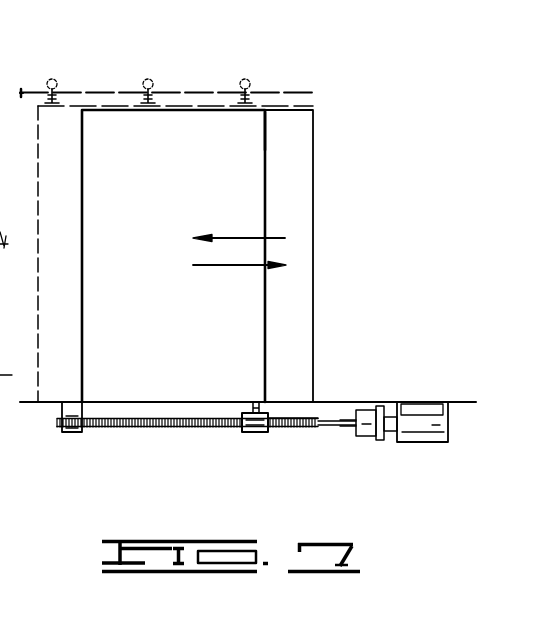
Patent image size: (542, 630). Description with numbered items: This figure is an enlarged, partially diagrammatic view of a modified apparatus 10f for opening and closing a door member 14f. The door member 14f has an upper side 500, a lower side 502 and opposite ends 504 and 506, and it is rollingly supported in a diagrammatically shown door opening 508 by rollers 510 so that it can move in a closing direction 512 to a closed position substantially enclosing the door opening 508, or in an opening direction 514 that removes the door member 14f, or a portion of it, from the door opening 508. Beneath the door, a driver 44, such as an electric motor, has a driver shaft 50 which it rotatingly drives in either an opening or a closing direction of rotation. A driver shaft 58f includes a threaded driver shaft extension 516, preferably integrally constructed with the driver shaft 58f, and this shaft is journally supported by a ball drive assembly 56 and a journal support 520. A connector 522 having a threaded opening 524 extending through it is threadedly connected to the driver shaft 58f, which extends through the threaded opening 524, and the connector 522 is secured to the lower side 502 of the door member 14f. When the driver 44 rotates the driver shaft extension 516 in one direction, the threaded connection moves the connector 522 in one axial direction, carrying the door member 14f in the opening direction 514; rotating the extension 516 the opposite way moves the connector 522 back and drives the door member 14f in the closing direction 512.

The upper side 500 is at (184, 106).
The rollers 510 is at (57, 79).
The end 506 is at (38, 277).
The door opening 508 is at (314, 234).
The end 504 is at (266, 212).
The door member 14f is at (266, 134).
The opening direction 514 is at (240, 238).
The closing direction 512 is at (240, 266).
The lower side 502 is at (200, 400).
The journal support 520 is at (70, 433).
The threaded driver shaft extension 516 is at (191, 428).
The threaded opening 524 is at (256, 401).
The connector 522 is at (245, 433).
The driver shaft 58f is at (283, 417).
The ball drive assembly 56 is at (366, 438).
The apparatus 10f is at (352, 442).
The driver shaft 50 is at (389, 432).
The driver 44 is at (440, 433).